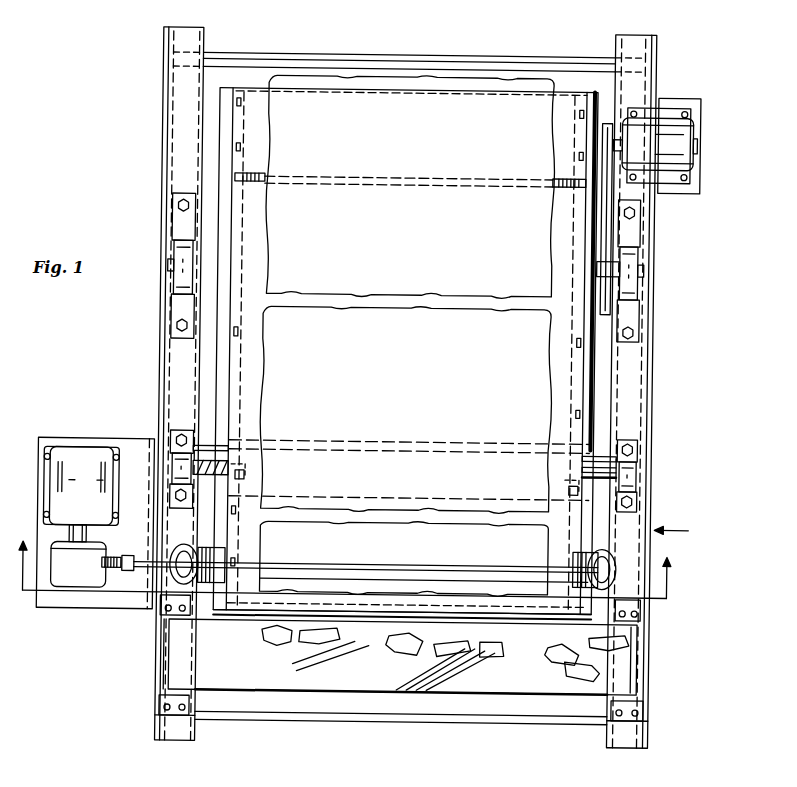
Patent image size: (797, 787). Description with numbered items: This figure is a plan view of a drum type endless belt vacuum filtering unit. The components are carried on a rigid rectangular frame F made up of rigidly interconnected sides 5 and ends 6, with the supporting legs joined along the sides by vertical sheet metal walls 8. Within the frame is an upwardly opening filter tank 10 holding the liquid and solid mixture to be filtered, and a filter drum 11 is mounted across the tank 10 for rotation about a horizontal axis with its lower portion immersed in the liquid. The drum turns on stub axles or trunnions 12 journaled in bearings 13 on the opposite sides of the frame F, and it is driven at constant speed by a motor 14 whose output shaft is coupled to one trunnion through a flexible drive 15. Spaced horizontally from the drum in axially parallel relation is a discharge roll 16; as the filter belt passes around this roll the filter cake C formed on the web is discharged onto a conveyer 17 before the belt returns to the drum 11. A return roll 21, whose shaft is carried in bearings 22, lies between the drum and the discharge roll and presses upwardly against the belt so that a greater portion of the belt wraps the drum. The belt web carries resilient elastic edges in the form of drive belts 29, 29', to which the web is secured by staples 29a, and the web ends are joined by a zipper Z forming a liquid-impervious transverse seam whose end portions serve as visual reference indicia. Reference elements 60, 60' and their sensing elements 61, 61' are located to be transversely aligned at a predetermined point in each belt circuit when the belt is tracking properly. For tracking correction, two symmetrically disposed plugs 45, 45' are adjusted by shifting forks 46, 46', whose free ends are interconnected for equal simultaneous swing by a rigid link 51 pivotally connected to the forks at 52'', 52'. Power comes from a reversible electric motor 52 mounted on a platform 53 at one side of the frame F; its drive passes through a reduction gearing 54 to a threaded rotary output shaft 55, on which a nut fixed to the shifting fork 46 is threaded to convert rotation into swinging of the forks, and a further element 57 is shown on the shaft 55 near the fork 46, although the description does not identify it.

The sides 5 is at (159, 383).
The ends 6 is at (424, 727).
The vertical sheet metal walls 8 is at (341, 580).
The filter tank 10 is at (611, 446).
The filter drum 11 is at (221, 94).
The stub axles or trunnions 12 is at (176, 273).
The bearings 13 is at (178, 303).
The motor 14 is at (687, 136).
The flexible drive 15 is at (604, 213).
The discharge roll 16 is at (221, 614).
The conveyer 17 is at (400, 657).
The return roll 21 is at (226, 450).
The bearings 22 is at (172, 470).
The elastic edge belt 29 is at (410, 440).
The elastic edge belt 29' is at (534, 380).
The staples 29a is at (240, 333).
The plug 45 is at (366, 554).
The plug 45' is at (543, 557).
The shifting fork 46 is at (179, 623).
The shifting fork 46' is at (595, 621).
The rigid link 51 is at (366, 579).
The reversible electric motor 52 is at (81, 485).
The pivotal connection 52' is at (595, 550).
The pivotal connection 52'' is at (198, 545).
The platform 53 is at (71, 609).
The reduction gearing 54 is at (71, 556).
The threaded rotary output shaft 55 is at (115, 563).
The coupling nut 57 is at (129, 559).
The reference element 60 is at (267, 480).
The reference element 60' is at (544, 485).
The sensing element 61 is at (267, 465).
The sensing element 61' is at (546, 476).
The filter cake C is at (407, 335).
The frame F is at (679, 531).
The zipper Z is at (242, 178).